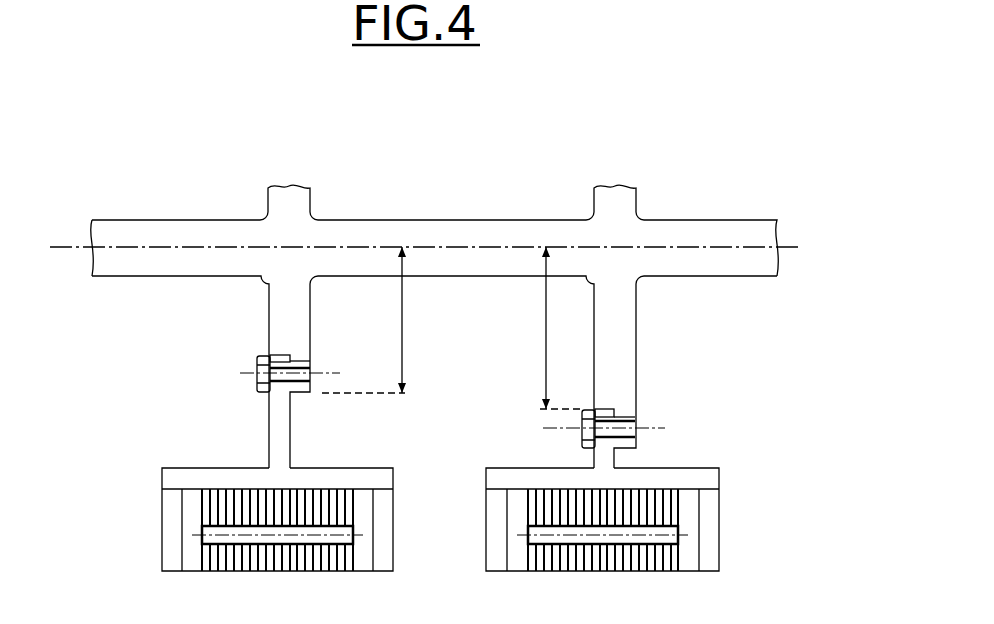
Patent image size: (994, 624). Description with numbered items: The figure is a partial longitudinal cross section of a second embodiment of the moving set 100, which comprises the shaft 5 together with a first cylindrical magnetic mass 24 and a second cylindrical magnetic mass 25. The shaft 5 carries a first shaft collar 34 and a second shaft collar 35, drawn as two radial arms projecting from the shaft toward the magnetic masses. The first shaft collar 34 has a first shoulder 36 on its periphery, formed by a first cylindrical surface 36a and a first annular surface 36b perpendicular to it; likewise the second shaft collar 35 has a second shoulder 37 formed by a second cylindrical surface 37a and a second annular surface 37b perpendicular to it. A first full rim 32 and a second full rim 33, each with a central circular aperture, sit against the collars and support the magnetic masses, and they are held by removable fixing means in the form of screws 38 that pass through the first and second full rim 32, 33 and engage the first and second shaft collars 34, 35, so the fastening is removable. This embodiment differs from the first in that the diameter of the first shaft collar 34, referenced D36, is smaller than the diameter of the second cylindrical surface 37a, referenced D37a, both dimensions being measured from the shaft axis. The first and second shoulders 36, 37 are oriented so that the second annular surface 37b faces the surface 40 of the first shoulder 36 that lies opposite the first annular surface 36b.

The moving set 100 is at (105, 165).
The shaft 5 is at (154, 232).
The first shaft collar 34 is at (311, 296).
The second shaft collar 35 is at (636, 314).
The first shoulder 36 is at (268, 352).
The first cylindrical surface 36a is at (282, 355).
The first annular surface 36b is at (292, 360).
The second shoulder 37 is at (593, 408).
The second cylindrical surface 37a is at (603, 410).
The second annular surface 37b is at (617, 417).
The screws 38 is at (256, 360).
The surface of the first shoulder 40 is at (310, 392).
The first full rim 32 is at (200, 467).
The second full rim 33 is at (524, 467).
The first cylindrical magnetic mass 24 is at (402, 462).
The second cylindrical magnetic mass 25 is at (722, 458).
The diameter of the first shaft collar D36 is at (426, 320).
The diameter of the second cylindrical surface D37a is at (514, 328).